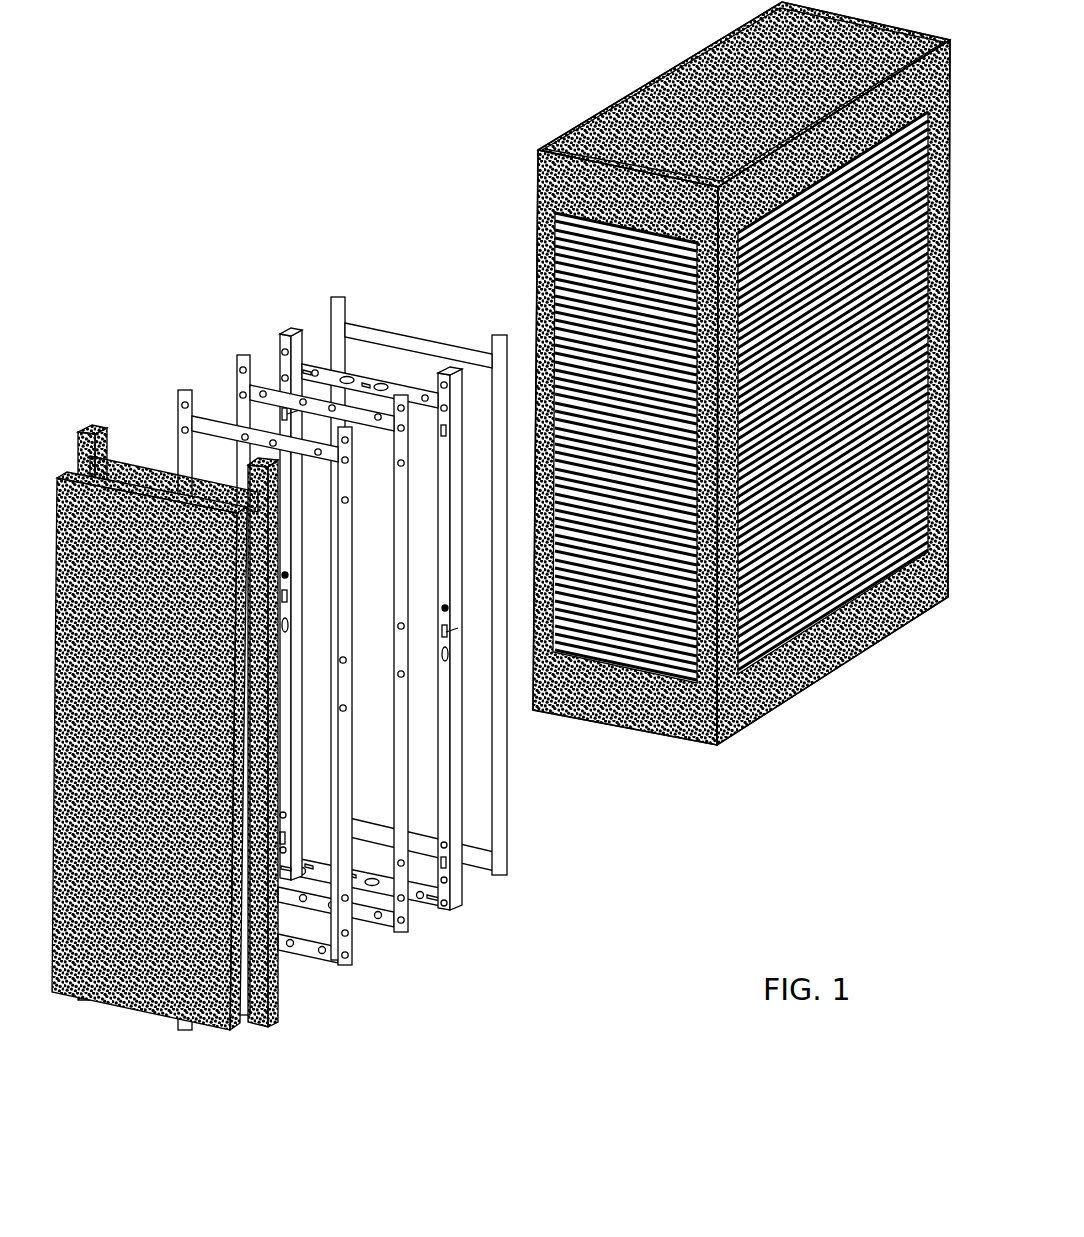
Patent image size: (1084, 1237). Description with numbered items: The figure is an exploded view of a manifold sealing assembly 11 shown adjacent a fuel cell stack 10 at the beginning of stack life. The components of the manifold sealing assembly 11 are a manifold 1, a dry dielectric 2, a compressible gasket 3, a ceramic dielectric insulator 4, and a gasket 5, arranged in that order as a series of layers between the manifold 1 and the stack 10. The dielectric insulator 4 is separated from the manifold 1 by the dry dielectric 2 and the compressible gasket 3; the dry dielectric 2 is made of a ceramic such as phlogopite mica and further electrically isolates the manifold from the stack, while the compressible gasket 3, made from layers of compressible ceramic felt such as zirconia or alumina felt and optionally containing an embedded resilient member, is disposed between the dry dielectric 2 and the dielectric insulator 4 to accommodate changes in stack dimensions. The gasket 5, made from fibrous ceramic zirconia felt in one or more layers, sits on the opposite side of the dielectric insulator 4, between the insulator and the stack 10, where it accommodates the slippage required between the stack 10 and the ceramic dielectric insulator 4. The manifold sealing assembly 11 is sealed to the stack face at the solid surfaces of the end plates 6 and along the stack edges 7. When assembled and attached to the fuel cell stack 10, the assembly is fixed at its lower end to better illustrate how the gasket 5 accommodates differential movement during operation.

The manifold 1 is at (195, 1007).
The dry dielectric 2 is at (320, 958).
The compressible gasket 3 is at (387, 913).
The ceramic dielectric insulator 4 is at (413, 893).
The gasket 5 is at (472, 850).
The end plates 6 is at (607, 173).
The stack edges 7 is at (725, 645).
The fuel cell stack 10 is at (640, 72).
The manifold sealing assembly 11 is at (246, 322).